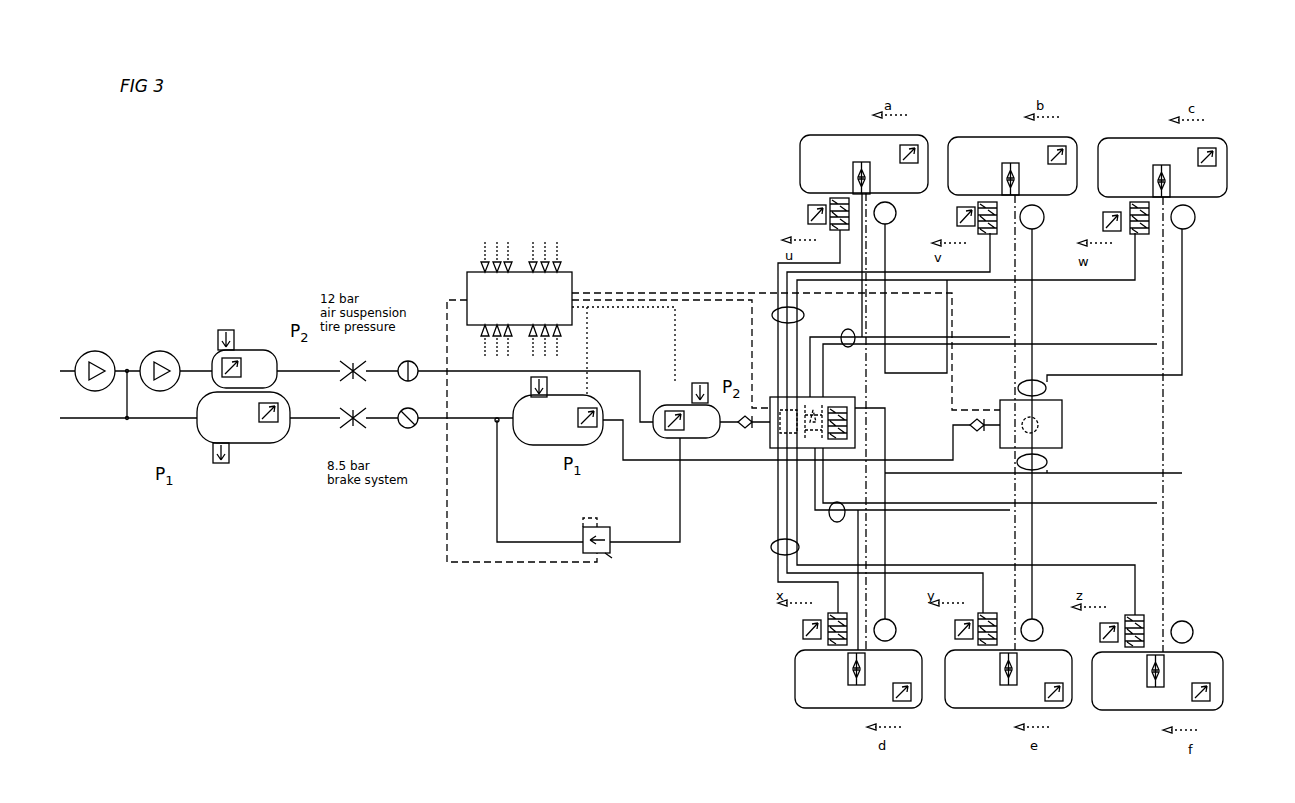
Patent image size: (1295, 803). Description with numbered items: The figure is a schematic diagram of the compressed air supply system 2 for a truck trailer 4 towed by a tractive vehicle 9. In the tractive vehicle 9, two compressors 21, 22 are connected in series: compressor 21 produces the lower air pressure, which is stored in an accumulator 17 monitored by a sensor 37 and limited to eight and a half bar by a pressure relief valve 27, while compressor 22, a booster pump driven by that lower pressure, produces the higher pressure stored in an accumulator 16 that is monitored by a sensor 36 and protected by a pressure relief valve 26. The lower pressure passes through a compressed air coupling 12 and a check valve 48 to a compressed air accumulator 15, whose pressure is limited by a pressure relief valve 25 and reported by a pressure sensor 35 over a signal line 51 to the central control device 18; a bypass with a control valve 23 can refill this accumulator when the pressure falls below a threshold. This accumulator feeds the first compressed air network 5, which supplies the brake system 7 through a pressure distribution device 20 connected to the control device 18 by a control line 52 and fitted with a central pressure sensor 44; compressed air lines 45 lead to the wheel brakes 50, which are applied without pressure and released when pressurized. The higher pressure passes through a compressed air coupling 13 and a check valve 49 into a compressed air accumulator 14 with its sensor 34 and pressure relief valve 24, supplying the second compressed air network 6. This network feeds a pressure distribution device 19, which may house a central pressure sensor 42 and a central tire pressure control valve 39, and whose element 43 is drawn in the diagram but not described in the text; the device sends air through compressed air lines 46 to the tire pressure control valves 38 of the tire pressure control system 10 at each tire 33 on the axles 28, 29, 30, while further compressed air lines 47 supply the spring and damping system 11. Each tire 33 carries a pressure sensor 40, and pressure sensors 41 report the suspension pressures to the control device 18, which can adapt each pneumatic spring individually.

The compressed air supply system 2 is at (1236, 107).
The truck trailer 4 is at (713, 196).
The first compressed air network 5 is at (952, 460).
The second compressed air network 6 is at (428, 370).
The brake system 7 is at (886, 226).
The tractive vehicle 9 is at (238, 283).
The tire pressure control system 10 is at (846, 175).
The spring and damping system 11 is at (840, 232).
The compressed air coupling 12 is at (357, 425).
The compressed air coupling 13 is at (358, 366).
The compressed air accumulator 14 is at (706, 438).
The compressed air accumulator 15 is at (530, 446).
The accumulator 16 is at (265, 352).
The accumulator 17 is at (275, 450).
The central control device 18 is at (575, 280).
The pressure distribution device 19 is at (858, 404).
The pressure distribution device 20 is at (1063, 440).
The compressor 21 is at (96, 351).
The compressor 22 is at (162, 351).
The control valve 23 is at (610, 553).
The pressure relief valve 24 is at (692, 390).
The pressure relief valve 25 is at (530, 387).
The pressure relief valve 26 is at (218, 342).
The pressure relief valve 27 is at (229, 465).
The axle 28 is at (868, 440).
The axle 29 is at (1034, 318).
The axle 30 is at (1165, 424).
The tire 33 is at (806, 142).
The sensor 34 is at (660, 438).
The pressure sensor 35 is at (604, 412).
The sensor 36 is at (222, 378).
The sensor 37 is at (282, 397).
The tire pressure control valve 38 is at (870, 175).
The central tire pressure control valve 39 is at (752, 462).
The pressure sensor 40 is at (918, 146).
The pressure sensor 41 is at (808, 216).
The central pressure sensor 42 is at (746, 430).
The solenoid 43 is at (840, 398).
The central pressure sensor 44 is at (980, 440).
The compressed air line 45 is at (1047, 390).
The compressed air line 46 is at (848, 347).
The compressed air line 47 is at (805, 315).
The check valve 48 is at (406, 428).
The check valve 49 is at (405, 362).
The wheel brake 50 is at (896, 214).
The signal line 51 is at (588, 330).
The control line 52 is at (685, 293).